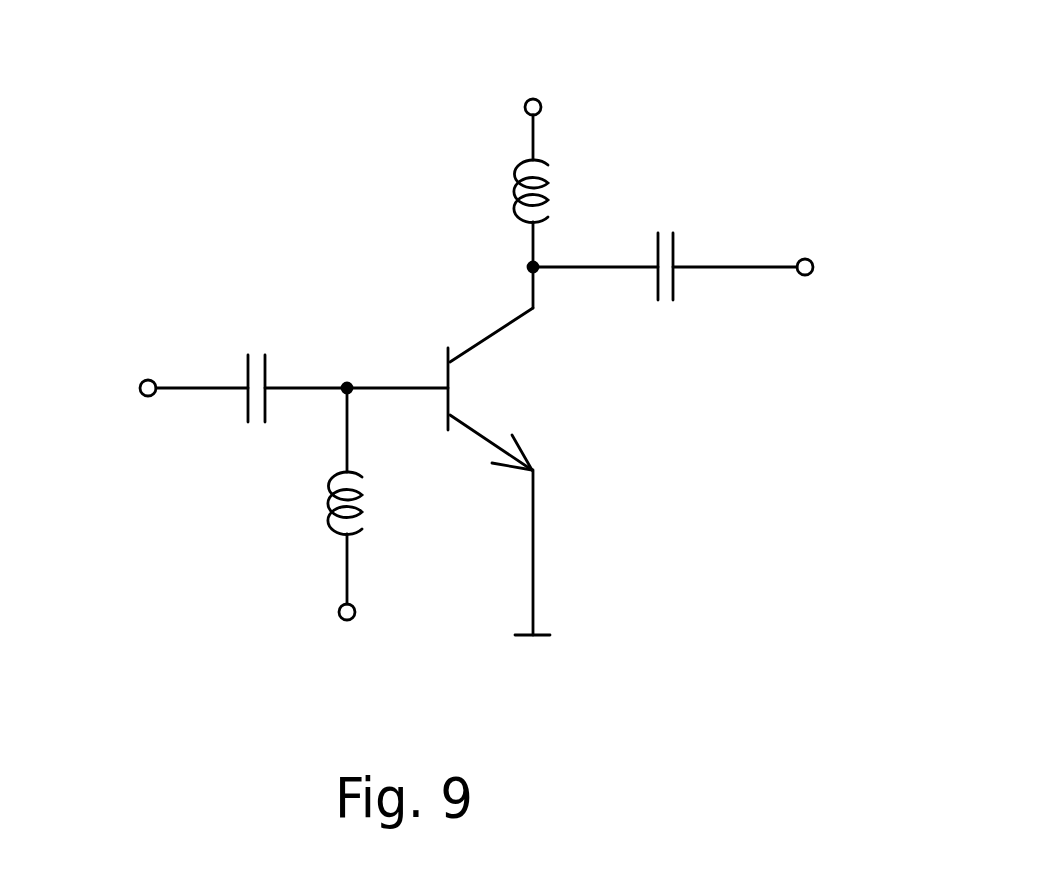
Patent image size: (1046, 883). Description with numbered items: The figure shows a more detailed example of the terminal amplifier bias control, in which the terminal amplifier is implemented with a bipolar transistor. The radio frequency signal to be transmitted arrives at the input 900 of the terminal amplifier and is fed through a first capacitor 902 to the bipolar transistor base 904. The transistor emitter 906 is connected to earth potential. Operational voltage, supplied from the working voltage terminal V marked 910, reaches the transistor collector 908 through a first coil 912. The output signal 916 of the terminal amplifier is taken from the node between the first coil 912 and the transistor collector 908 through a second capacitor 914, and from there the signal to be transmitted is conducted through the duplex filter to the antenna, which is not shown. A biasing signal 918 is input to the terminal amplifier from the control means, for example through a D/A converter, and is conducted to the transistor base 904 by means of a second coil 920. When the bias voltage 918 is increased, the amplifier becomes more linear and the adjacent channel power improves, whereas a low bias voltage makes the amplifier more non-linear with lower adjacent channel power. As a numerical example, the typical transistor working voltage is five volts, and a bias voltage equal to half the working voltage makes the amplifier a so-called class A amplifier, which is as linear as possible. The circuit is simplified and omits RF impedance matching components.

The input 900 is at (148, 400).
The first capacitor 902 is at (268, 362).
The bipolar transistor base 904 is at (445, 370).
The transistor emitter 906 is at (535, 472).
The transistor collector 908 is at (537, 308).
The supply voltage terminal V 910 is at (543, 103).
The first coil 912 is at (512, 175).
The second capacitor 914 is at (676, 249).
The output signal 916 is at (807, 258).
The biasing signal 918 is at (360, 612).
The second coil 920 is at (327, 528).